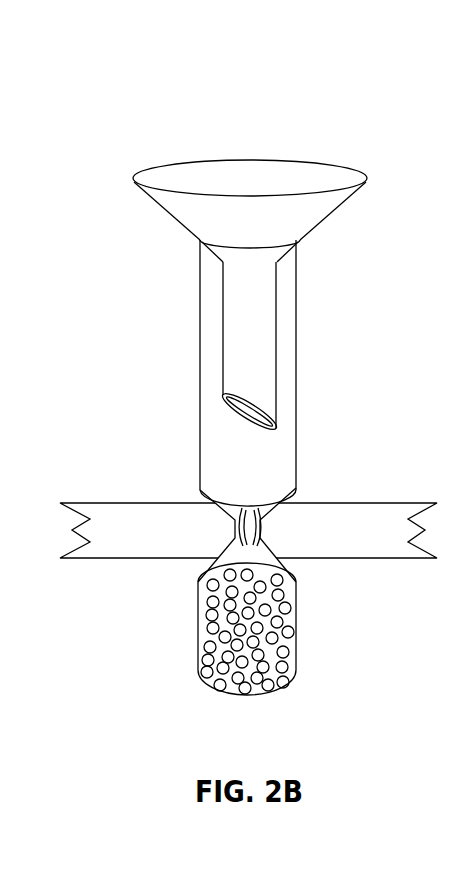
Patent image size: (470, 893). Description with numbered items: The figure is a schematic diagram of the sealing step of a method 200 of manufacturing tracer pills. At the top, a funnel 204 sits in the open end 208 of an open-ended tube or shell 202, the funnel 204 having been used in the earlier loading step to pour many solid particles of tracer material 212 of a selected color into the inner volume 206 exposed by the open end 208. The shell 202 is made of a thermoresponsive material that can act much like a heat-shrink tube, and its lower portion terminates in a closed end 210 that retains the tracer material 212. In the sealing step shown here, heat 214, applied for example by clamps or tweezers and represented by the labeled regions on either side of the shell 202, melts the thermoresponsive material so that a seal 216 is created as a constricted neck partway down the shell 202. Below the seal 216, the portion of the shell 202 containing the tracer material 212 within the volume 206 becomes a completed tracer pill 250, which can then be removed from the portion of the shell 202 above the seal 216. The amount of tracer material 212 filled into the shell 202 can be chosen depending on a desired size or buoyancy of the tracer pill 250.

The method 200 is at (121, 63).
The shell 202 is at (300, 320).
The funnel 204 is at (320, 168).
The inner volume 206 is at (270, 648).
The open end 208 is at (199, 243).
The closed end 210 is at (198, 672).
The tracer material 212 is at (296, 677).
The heat 214 is at (138, 503).
The seal 216 is at (230, 540).
The tracer pill 250 is at (198, 640).